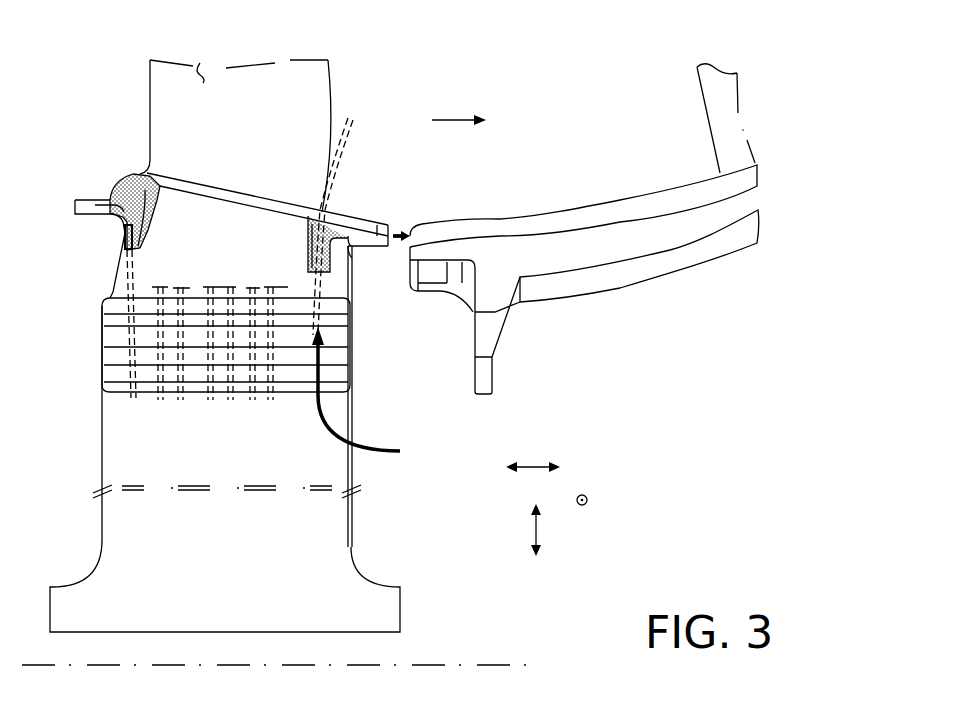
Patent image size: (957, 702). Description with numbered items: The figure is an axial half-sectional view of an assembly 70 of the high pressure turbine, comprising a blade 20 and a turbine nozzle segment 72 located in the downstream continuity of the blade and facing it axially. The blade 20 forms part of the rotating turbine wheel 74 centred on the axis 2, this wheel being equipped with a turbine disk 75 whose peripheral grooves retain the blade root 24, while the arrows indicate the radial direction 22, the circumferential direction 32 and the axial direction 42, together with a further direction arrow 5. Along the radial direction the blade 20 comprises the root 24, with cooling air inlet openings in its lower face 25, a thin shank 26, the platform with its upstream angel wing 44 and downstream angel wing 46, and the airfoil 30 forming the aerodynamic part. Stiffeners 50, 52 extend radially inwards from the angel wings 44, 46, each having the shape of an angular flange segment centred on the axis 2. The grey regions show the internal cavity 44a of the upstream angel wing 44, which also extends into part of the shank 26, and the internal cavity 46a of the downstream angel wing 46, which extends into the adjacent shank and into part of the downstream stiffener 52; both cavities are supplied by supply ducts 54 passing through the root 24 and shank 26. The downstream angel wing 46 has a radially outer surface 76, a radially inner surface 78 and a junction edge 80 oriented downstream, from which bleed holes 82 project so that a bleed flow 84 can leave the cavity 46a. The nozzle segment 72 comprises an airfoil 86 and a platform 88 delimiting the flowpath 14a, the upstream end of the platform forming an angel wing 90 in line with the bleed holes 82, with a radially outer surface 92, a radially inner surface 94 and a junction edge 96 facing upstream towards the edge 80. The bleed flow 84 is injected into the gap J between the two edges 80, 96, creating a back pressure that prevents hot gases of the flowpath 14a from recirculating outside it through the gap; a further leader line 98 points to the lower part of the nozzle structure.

The axis 2 is at (503, 665).
The axial direction 5 is at (458, 117).
The flowpath 14a is at (645, 172).
The blade 20 is at (252, 52).
The radial direction 22 is at (537, 530).
The blade root 24 is at (142, 352).
The lower face 25 is at (198, 392).
The shank 26 is at (207, 223).
The airfoil 30 is at (200, 74).
The circumferential direction 32 is at (588, 497).
The axial direction 42 is at (535, 467).
The upstream angel wing 44 is at (85, 204).
The internal cavity 44a is at (130, 184).
The downstream angel wing 46 is at (348, 208).
The internal cavity 46a is at (343, 218).
The stiffener 50 is at (125, 237).
The stiffener 52 is at (357, 272).
The supply ducts 54 is at (181, 394).
The assembly 70 is at (132, 74).
The turbine nozzle segment 72 is at (748, 82).
The rotating turbine wheel 74 is at (95, 433).
The turbine disk 75 is at (116, 530).
The radially outer surface 76 is at (386, 220).
The radially inner surface 78 is at (378, 247).
The junction edge 80 is at (388, 240).
The bleed holes 82 is at (400, 228).
The bleed flow 84 is at (405, 233).
The airfoil 86 is at (732, 128).
The platform 88 is at (700, 180).
The upstream angel wing 90 is at (453, 253).
The radially outer surface 92 is at (495, 233).
The radially inner surface 94 is at (495, 310).
The junction edge 96 is at (414, 284).
The disk bore arm 98 is at (490, 335).
The gap J is at (410, 233).